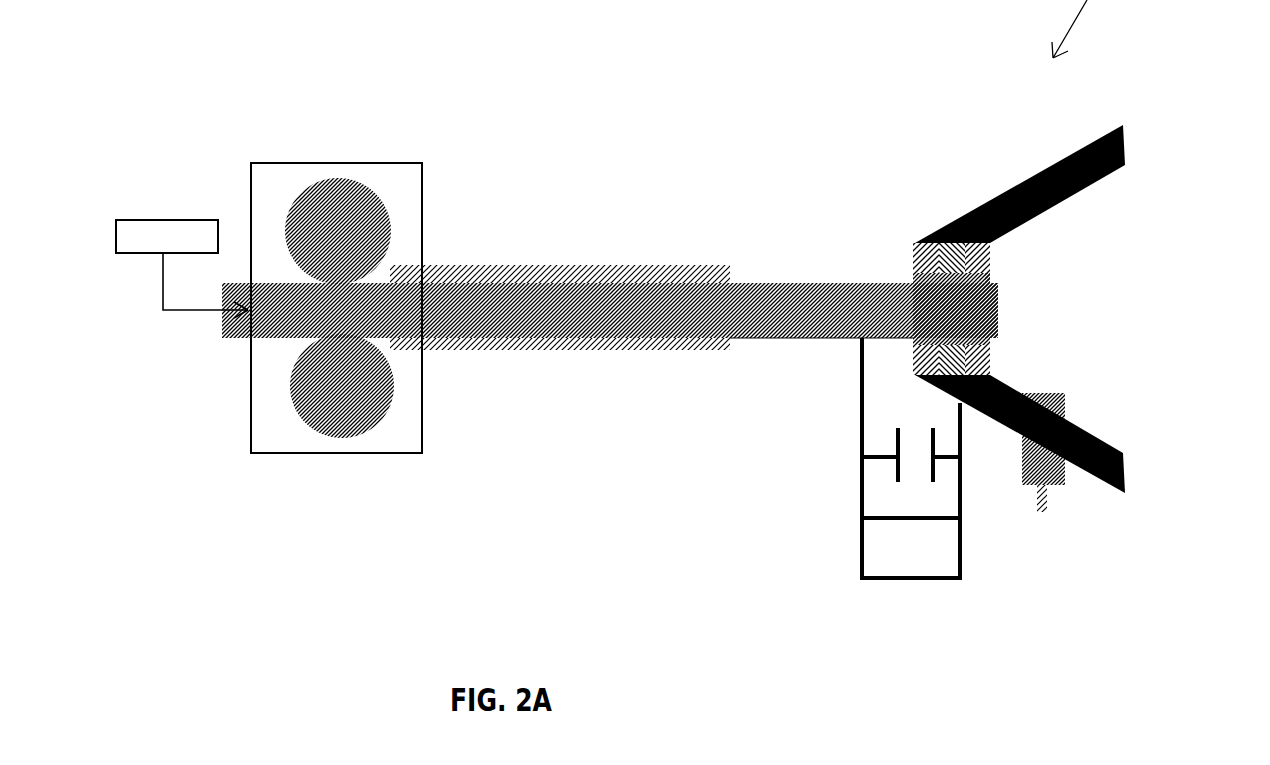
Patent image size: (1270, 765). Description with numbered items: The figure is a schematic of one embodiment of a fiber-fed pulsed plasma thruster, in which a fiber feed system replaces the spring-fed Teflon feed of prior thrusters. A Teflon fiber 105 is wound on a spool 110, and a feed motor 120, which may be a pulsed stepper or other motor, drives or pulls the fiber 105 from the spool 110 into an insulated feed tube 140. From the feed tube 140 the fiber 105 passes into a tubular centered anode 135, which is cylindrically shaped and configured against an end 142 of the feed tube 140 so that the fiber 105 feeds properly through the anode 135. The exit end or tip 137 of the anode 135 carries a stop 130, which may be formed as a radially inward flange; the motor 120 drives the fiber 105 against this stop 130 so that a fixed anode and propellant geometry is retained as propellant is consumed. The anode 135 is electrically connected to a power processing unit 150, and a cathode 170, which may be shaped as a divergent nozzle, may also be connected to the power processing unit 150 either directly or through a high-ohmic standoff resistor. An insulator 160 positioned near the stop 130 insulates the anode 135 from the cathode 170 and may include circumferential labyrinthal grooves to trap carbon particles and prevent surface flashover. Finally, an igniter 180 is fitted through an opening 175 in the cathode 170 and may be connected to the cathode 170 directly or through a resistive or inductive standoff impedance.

The Teflon fiber 105 is at (490, 303).
The spool 110 is at (194, 212).
The feed motor 120 is at (308, 445).
The stop 130 is at (1000, 285).
The centered anode 135 is at (778, 345).
The exit end or tip of the anode 137 is at (995, 277).
The insulated feed tube 140 is at (561, 263).
The end of the feed tube 142 is at (728, 348).
The power processing unit 150 is at (953, 570).
The insulator 160 is at (918, 262).
The cathode 170 is at (968, 213).
The opening in the cathode 175 is at (1067, 417).
The igniter 180 is at (1047, 512).